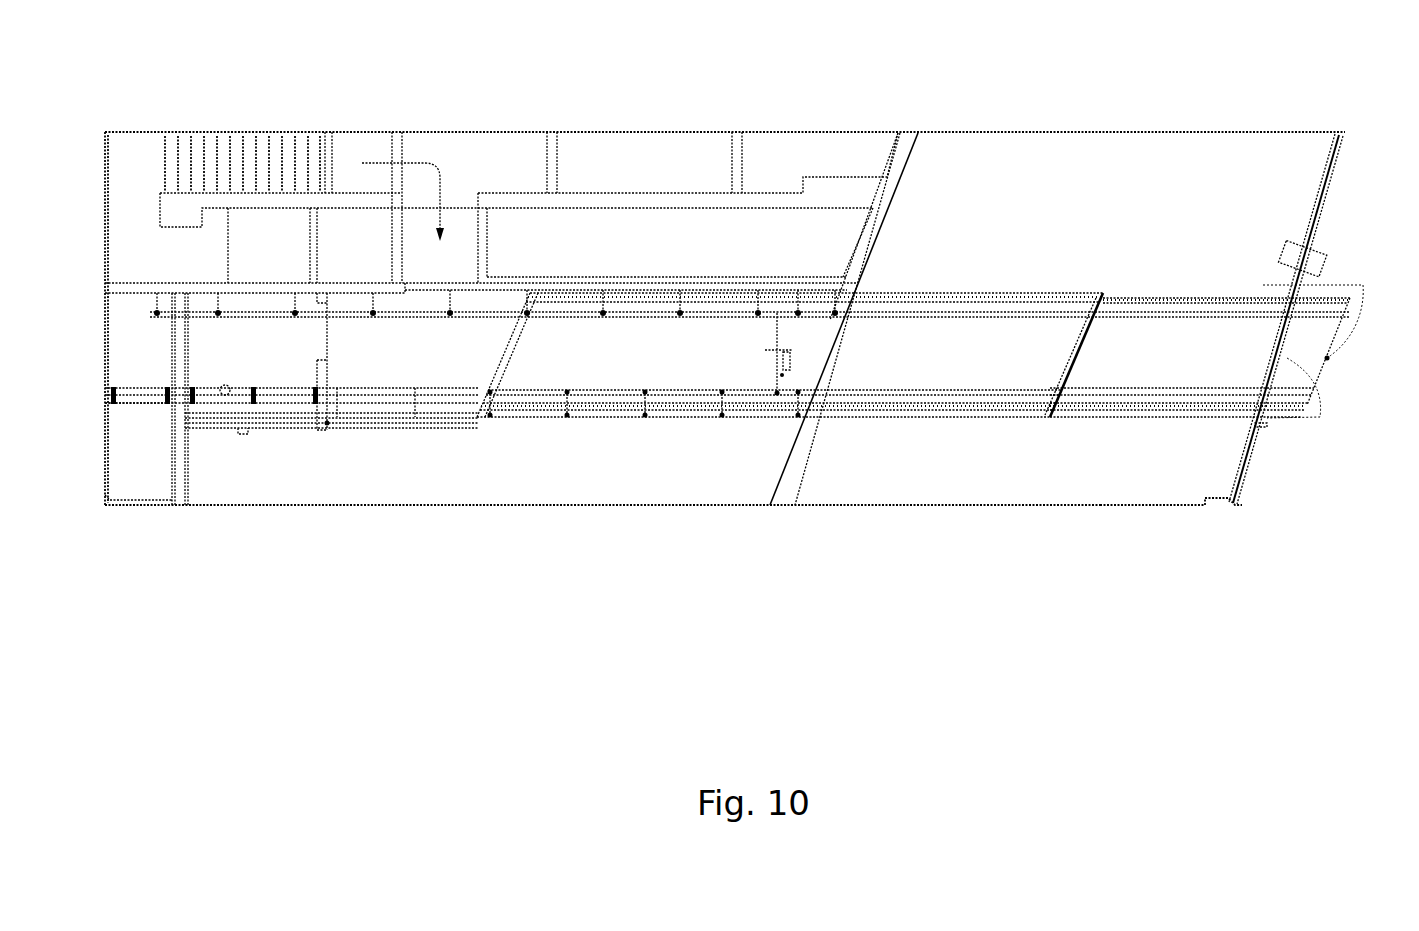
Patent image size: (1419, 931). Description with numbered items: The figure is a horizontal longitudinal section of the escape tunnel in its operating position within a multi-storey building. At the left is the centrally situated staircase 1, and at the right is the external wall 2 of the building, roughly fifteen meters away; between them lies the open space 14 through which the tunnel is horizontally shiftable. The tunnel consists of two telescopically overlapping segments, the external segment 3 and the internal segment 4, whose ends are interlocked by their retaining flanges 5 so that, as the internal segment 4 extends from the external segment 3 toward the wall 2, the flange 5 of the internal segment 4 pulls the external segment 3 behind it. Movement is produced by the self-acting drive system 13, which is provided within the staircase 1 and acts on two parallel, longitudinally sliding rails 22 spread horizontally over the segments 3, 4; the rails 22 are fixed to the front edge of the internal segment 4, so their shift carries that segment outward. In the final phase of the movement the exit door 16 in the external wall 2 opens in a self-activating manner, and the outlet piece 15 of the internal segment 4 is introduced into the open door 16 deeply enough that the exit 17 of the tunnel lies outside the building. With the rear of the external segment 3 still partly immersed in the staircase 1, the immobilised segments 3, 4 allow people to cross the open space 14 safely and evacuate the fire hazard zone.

The staircase 1 is at (380, 357).
The external wall 2 is at (1322, 220).
The external segment 3 is at (937, 423).
The internal segment 4 is at (1128, 410).
The retaining flange 5 is at (1078, 355).
The drive system 13 is at (775, 397).
The space 14 is at (1122, 206).
The outlet piece 15 is at (1216, 442).
The exit door 16 is at (1287, 358).
The exit 17 is at (1283, 250).
The sliding rails 22 is at (405, 393).